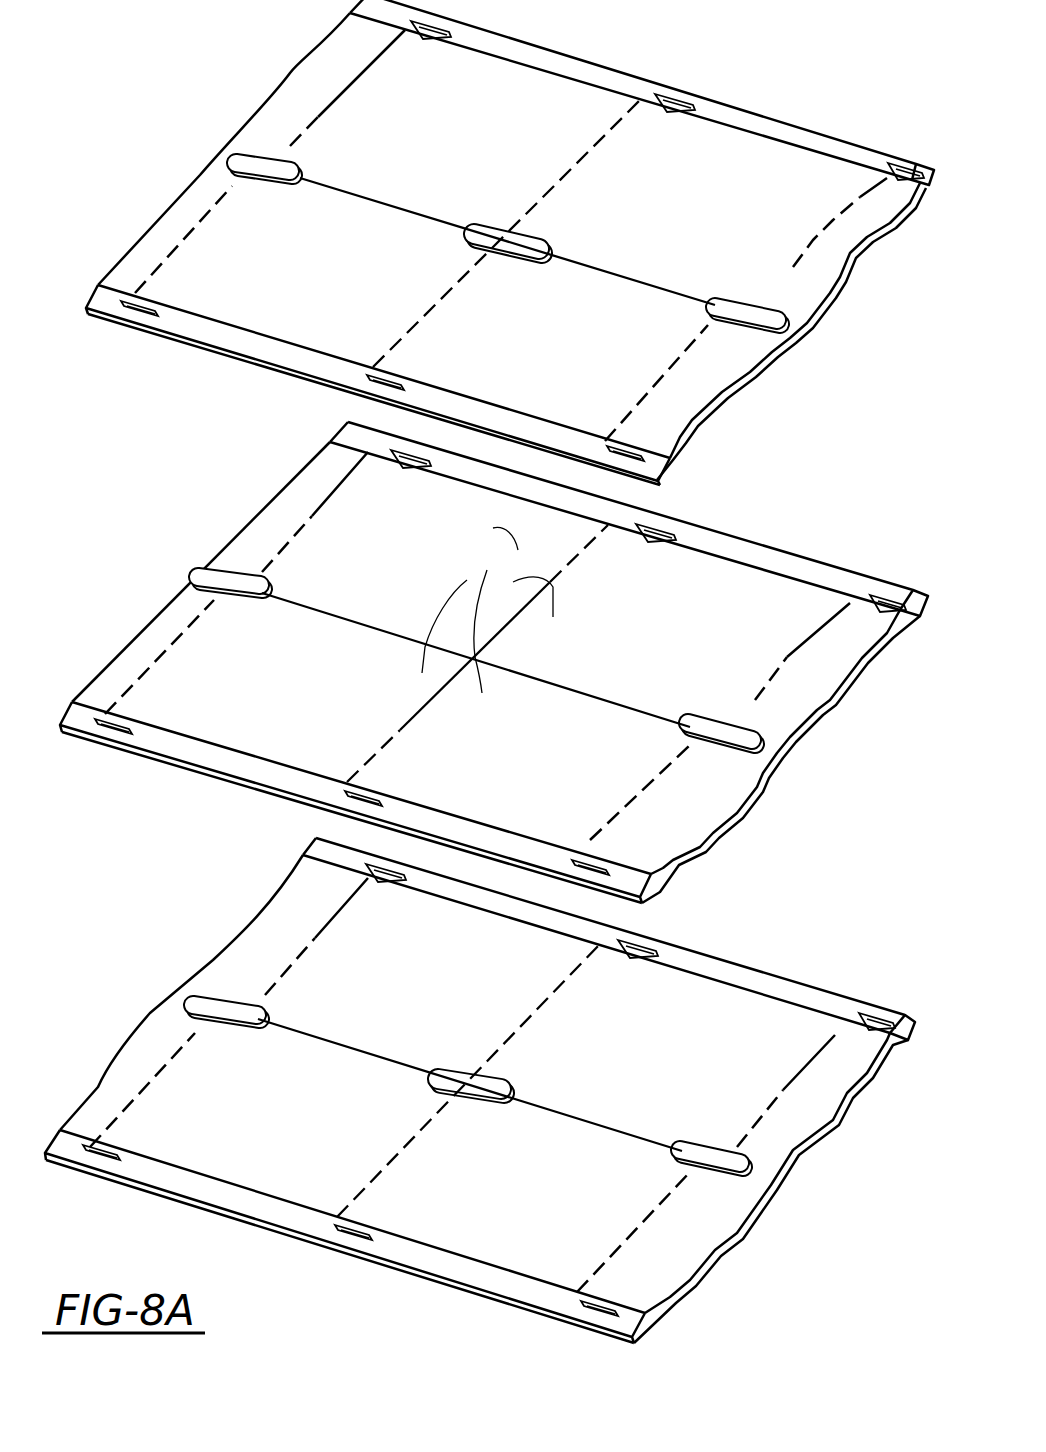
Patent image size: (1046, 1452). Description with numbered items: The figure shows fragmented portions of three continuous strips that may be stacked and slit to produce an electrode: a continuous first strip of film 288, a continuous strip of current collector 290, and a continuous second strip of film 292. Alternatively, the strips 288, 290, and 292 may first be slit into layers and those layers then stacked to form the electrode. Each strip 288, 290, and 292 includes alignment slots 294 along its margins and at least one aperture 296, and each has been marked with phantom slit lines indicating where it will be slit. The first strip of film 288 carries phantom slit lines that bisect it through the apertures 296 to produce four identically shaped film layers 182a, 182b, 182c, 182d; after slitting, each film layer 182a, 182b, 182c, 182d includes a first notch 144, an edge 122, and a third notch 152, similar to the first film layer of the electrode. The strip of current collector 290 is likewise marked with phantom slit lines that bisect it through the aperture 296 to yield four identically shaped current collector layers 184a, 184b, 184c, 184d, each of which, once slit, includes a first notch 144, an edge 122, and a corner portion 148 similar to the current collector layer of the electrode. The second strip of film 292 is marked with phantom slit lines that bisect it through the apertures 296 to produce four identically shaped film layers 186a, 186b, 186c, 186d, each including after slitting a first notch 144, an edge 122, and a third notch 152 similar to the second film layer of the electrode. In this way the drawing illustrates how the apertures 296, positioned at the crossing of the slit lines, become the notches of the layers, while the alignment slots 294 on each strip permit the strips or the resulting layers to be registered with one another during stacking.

The edge 122 is at (400, 205).
The first notch 144 is at (203, 172).
The corner portion 148 is at (487, 610).
The third notch 152 is at (503, 232).
The film layer 182a is at (578, 385).
The film layer 182b is at (733, 195).
The film layer 182c is at (486, 127).
The film layer 182d is at (273, 300).
The current collector layer 184a is at (603, 770).
The current collector layer 184b is at (690, 607).
The current collector layer 184c is at (431, 527).
The current collector layer 184d is at (298, 677).
The film layer 186a is at (541, 1195).
The film layer 186b is at (688, 1020).
The film layer 186c is at (434, 967).
The film layer 186d is at (290, 1145).
The first strip of film 288 is at (762, 62).
The strip of current collector 290 is at (815, 478).
The second strip of film 292 is at (790, 938).
The alignment slots 294 is at (473, 42).
The aperture 296 is at (302, 185).